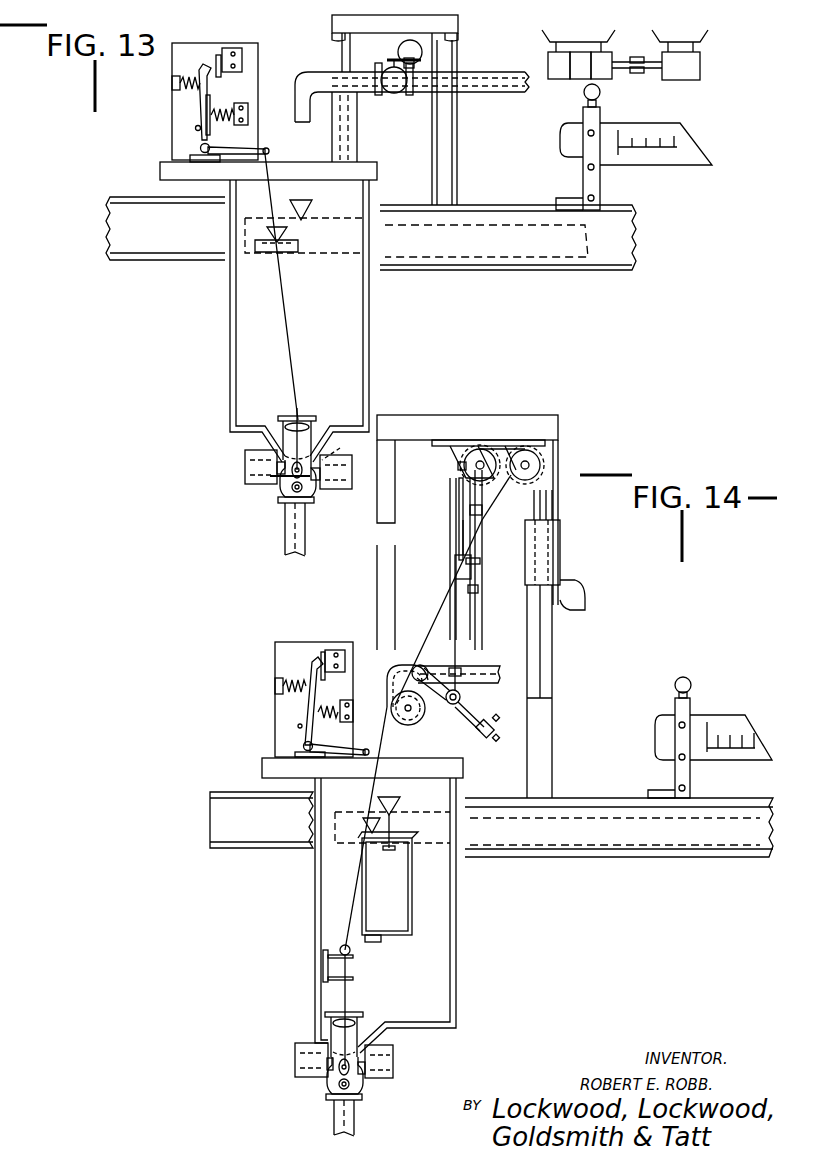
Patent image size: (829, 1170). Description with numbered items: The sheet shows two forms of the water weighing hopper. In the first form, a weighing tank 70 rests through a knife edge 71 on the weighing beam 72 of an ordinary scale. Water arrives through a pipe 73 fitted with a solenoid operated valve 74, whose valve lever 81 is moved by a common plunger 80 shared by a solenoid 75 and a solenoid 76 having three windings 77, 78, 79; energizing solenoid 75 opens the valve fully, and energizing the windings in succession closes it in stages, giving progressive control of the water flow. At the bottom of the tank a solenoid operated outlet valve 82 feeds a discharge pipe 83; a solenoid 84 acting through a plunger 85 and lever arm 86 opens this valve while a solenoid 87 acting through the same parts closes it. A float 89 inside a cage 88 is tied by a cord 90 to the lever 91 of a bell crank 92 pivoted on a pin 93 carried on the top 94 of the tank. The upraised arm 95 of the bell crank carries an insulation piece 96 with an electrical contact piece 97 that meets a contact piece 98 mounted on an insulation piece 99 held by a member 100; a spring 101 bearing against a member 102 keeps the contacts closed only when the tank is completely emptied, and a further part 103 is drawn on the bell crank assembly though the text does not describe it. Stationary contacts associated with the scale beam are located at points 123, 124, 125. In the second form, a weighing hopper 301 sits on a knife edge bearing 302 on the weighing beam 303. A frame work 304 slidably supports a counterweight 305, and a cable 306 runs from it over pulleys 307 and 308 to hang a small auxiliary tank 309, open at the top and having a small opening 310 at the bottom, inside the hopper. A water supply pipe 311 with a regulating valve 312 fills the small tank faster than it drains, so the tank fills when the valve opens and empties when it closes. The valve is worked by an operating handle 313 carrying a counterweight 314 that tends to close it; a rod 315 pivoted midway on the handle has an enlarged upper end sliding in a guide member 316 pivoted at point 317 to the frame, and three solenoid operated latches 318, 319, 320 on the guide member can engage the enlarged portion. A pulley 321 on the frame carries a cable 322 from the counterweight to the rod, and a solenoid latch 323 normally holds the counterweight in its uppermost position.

In FIG. 13, the weighing tank 70 is at (370, 330).
In FIG. 13, the knife edge 71 is at (312, 207).
In FIG. 13, the weighing beam 72 is at (336, 255).
In FIG. 13, the pipe 73 is at (482, 73).
In FIG. 13, the solenoid operated valve 74 is at (397, 93).
In FIG. 13, the solenoid 75 is at (700, 70).
In FIG. 13, the solenoid 76 is at (548, 33).
In FIG. 13, the winding 77 is at (559, 65).
In FIG. 13, the winding 78 is at (580, 65).
In FIG. 13, the winding 79 is at (601, 65).
In FIG. 13, the common plunger 80 is at (653, 69).
In FIG. 13, the valve lever 81 is at (396, 60).
In FIG. 13, the solenoid operated outlet valve 82 is at (290, 492).
In FIG. 14, the solenoid operated outlet valve 82 is at (335, 1082).
In FIG. 13, the discharge pipe 83 is at (307, 538).
In FIG. 14, the discharge pipe 83 is at (355, 1125).
In FIG. 13, the solenoid 84 is at (340, 490).
In FIG. 14, the solenoid 84 is at (380, 1060).
In FIG. 13, the plunger 85 is at (344, 447).
In FIG. 14, the plunger 85 is at (370, 1078).
In FIG. 13, the lever arm 86 is at (284, 471).
In FIG. 13, the solenoid 87 is at (245, 464).
In FIG. 14, the solenoid 87 is at (295, 1052).
In FIG. 13, the cage 88 is at (315, 425).
In FIG. 14, the cage 88 is at (362, 1024).
In FIG. 13, the float 89 is at (302, 425).
In FIG. 14, the float 89 is at (350, 1022).
In FIG. 13, the cord 90 is at (288, 332).
In FIG. 14, the cord 90 is at (346, 900).
In FIG. 13, the lever 91 is at (245, 150).
In FIG. 13, the bell crank 92 is at (200, 145).
In FIG. 13, the pin 93 is at (200, 152).
In FIG. 13, the top 94 is at (288, 166).
In FIG. 13, the upraised arm 95 is at (198, 118).
In FIG. 13, the insulation piece 96 is at (212, 90).
In FIG. 13, the electrical contact piece 97 is at (200, 70).
In FIG. 14, the electrical contact piece 97 is at (312, 668).
In FIG. 13, the electrical contact piece 98 is at (214, 72).
In FIG. 14, the electrical contact piece 98 is at (320, 664).
In FIG. 13, the insulation piece 99 is at (218, 66).
In FIG. 13, the member 100 is at (242, 55).
In FIG. 13, the spring 101 is at (212, 100).
In FIG. 13, the member 102 is at (249, 110).
In FIG. 13, the pin 103 is at (195, 129).
In FIG. 13, the contact point 123 is at (588, 198).
In FIG. 14, the contact point 123 is at (690, 790).
In FIG. 13, the contact point 124 is at (588, 166).
In FIG. 14, the contact point 124 is at (679, 758).
In FIG. 13, the contact point 125 is at (588, 133).
In FIG. 14, the contact point 125 is at (679, 726).
In FIG. 14, the weighing hopper 301 is at (457, 932).
In FIG. 14, the knife edge bearing 302 is at (400, 800).
In FIG. 14, the weighing beam 303 is at (442, 845).
In FIG. 14, the frame work 304 is at (553, 718).
In FIG. 14, the counterweight 305 is at (562, 572).
In FIG. 14, the cable 306 is at (505, 497).
In FIG. 14, the pulley 307 is at (542, 465).
In FIG. 14, the pulley 308 is at (422, 722).
In FIG. 14, the small auxiliary tank 309 is at (413, 906).
In FIG. 14, the small opening 310 is at (372, 940).
In FIG. 14, the water supply pipe 311 is at (478, 668).
In FIG. 14, the regulating valve 312 is at (420, 660).
In FIG. 14, the operating handle 313 is at (470, 712).
In FIG. 14, the counterweight 314 is at (487, 735).
In FIG. 14, the rod 315 is at (455, 570).
In FIG. 14, the guide member 316 is at (450, 514).
In FIG. 14, the pivot point 317 is at (458, 466).
In FIG. 14, the solenoid operated latch 318 is at (482, 520).
In FIG. 14, the solenoid operated latch 319 is at (482, 562).
In FIG. 14, the solenoid operated latch 320 is at (480, 588).
In FIG. 14, the pulley 321 is at (504, 450).
In FIG. 14, the cable 322 is at (459, 532).
In FIG. 14, the solenoid latch 323 is at (586, 598).